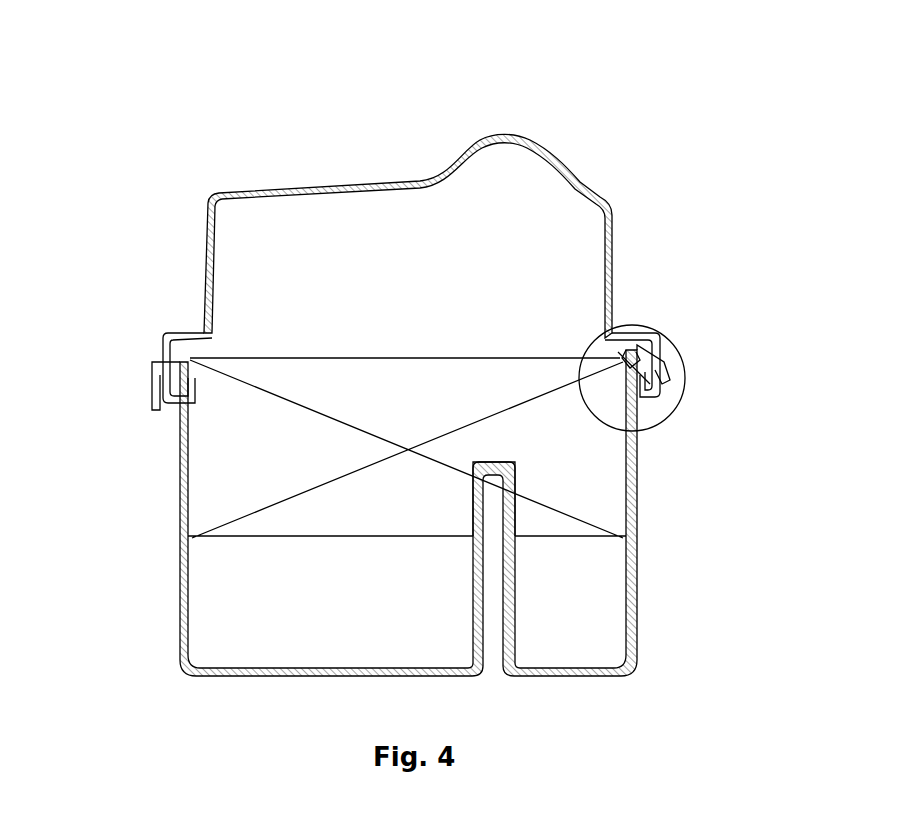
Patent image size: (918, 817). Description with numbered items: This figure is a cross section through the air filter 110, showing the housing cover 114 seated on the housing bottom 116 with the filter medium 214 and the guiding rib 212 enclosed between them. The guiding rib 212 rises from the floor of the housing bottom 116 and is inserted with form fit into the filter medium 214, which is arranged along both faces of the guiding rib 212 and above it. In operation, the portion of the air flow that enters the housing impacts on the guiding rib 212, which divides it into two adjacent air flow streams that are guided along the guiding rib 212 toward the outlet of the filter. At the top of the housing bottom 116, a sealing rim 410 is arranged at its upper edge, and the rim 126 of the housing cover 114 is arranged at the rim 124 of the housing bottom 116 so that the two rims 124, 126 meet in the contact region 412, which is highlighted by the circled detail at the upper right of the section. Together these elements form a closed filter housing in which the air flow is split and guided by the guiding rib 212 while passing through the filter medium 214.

The air filter 110 is at (232, 153).
The housing cover 114 is at (185, 297).
The housing bottom 116 is at (643, 596).
The rim 124 is at (651, 415).
The rim 126 is at (643, 328).
The guiding rib 212 is at (520, 612).
The filter medium 214 is at (262, 455).
The sealing rim 410 is at (630, 360).
The contact region 412 is at (680, 340).